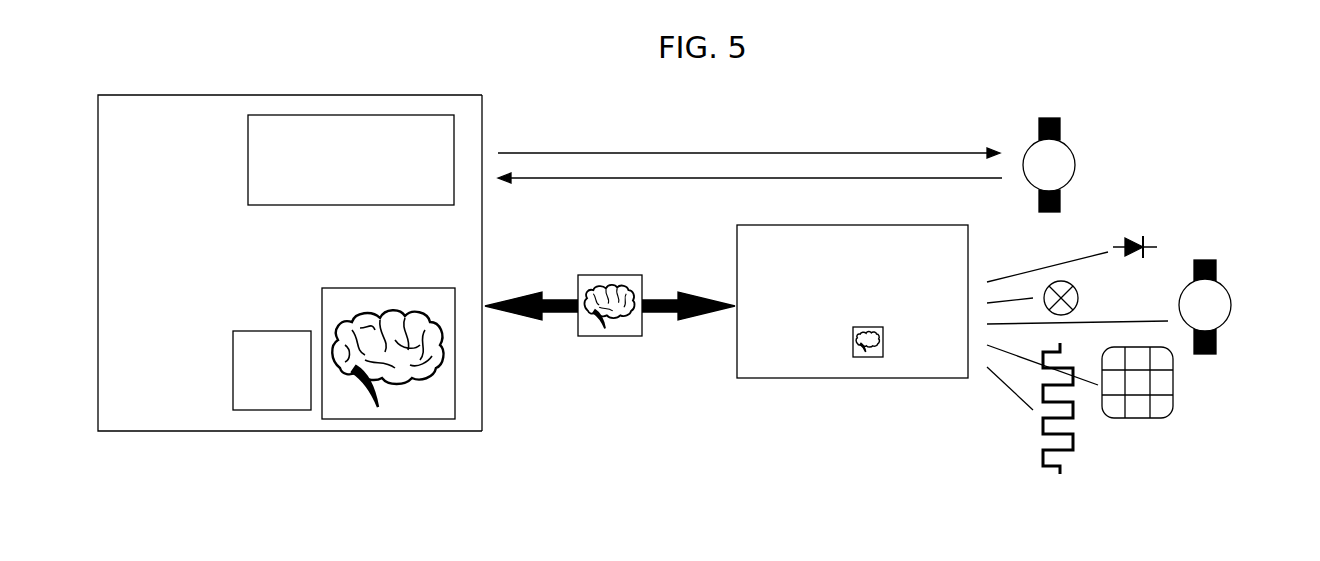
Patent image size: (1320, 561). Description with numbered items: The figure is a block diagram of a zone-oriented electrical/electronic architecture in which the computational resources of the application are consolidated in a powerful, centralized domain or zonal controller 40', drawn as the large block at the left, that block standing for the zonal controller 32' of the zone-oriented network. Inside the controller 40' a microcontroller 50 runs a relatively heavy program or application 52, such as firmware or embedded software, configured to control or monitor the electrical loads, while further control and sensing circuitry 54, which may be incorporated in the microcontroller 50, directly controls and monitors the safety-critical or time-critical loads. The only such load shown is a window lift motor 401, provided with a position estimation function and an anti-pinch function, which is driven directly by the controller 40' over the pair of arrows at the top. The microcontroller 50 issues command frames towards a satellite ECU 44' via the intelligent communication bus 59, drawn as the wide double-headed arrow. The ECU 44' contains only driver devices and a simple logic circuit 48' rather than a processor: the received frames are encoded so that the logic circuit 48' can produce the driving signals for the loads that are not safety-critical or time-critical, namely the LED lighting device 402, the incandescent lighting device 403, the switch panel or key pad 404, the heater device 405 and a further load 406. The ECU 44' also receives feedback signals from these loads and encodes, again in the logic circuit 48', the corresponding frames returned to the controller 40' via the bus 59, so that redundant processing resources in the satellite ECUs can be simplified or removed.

The domain or zonal controller 40' is at (290, 224).
The housing 32' is at (516, 263).
The control and sensing circuitry 54 is at (270, 157).
The microcontroller 50 is at (257, 368).
The program or application 52 is at (440, 400).
The intelligent bus system 59 is at (665, 313).
The satellite ECU 44' is at (850, 325).
The simple logic circuit 48' is at (885, 382).
The window lift motor 401 is at (1067, 160).
The LED lighting device 402 is at (1152, 238).
The incandescent lighting device 403 is at (1078, 298).
The switch panel or key pad 404 is at (1175, 390).
The heater device 405 is at (1075, 438).
The electrical load 406 is at (1222, 300).